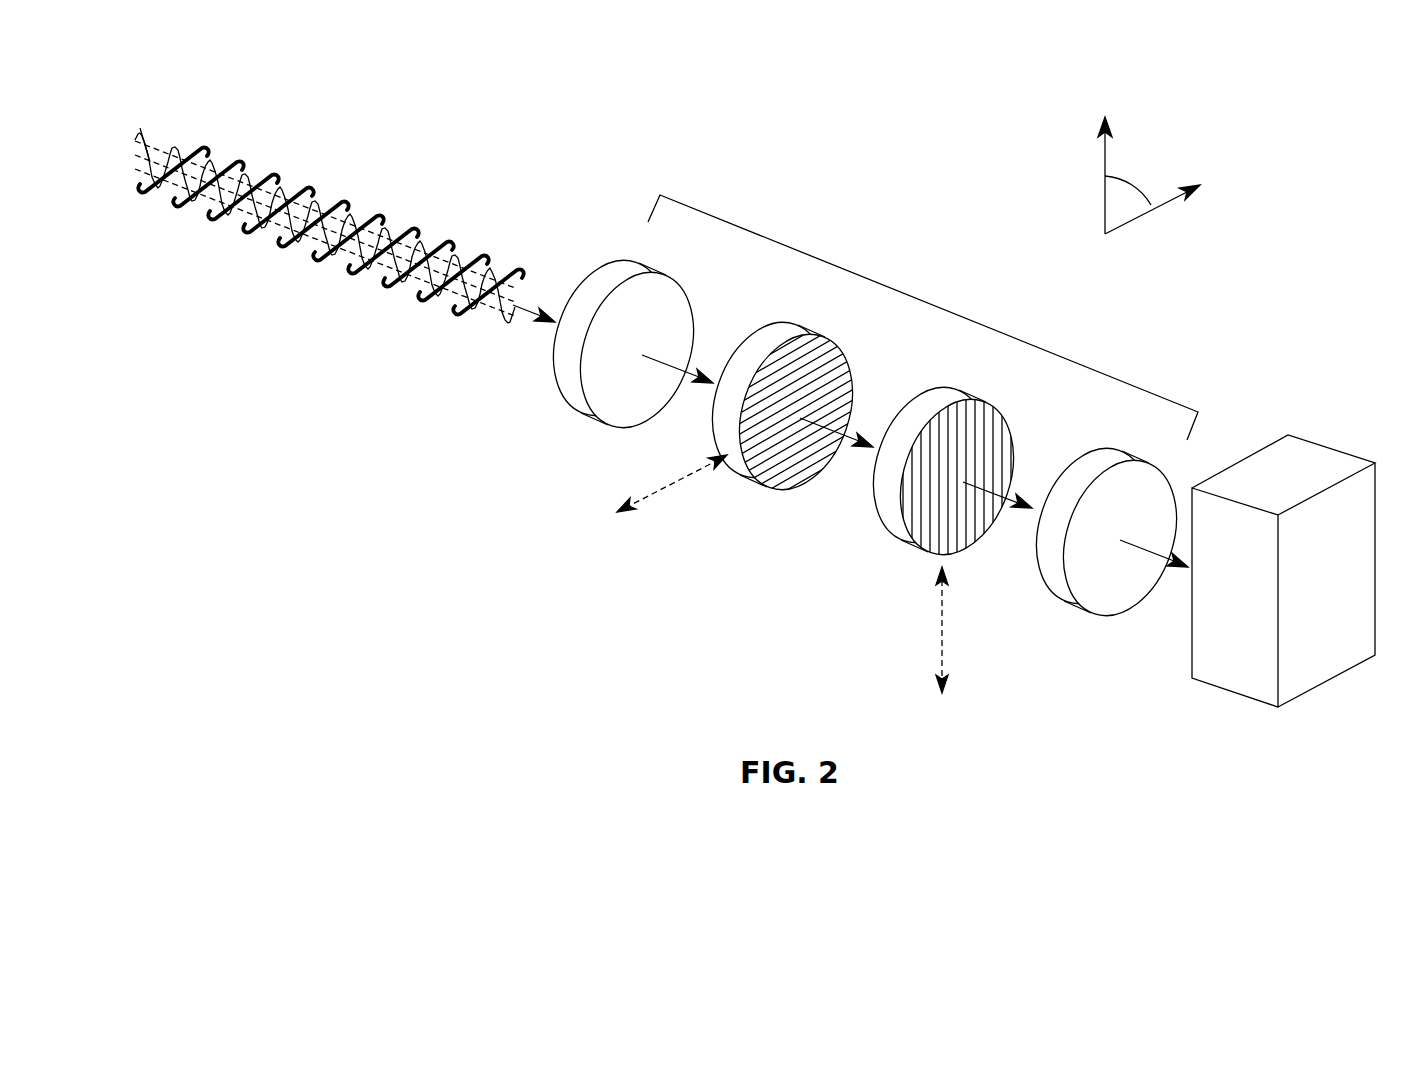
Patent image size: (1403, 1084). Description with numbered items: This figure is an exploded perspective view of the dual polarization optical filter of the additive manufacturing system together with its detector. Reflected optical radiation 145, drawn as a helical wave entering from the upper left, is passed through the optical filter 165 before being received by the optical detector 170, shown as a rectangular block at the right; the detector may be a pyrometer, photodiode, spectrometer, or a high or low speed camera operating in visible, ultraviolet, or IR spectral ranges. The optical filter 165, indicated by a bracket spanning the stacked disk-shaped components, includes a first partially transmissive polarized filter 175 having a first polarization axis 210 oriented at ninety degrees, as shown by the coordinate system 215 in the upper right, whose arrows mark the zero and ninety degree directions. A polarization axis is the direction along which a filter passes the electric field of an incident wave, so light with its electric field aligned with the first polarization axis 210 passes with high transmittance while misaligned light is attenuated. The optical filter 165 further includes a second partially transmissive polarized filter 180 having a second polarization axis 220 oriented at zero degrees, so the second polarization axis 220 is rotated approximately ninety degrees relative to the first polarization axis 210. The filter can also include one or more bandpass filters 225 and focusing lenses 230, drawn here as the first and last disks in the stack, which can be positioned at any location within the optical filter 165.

The reflected optical radiation 145 is at (263, 257).
The bandpass filter 225 is at (606, 278).
The first partially transmissive polarized filter 175 is at (782, 331).
The second partially transmissive polarized filter 180 is at (948, 402).
The focusing lens 230 is at (1112, 460).
The optical detector 170 is at (1292, 453).
The optical filter 165 is at (928, 300).
The first polarization axis 210 is at (667, 491).
The second polarization axis 220 is at (942, 644).
The coordinate system 215 is at (1077, 171).